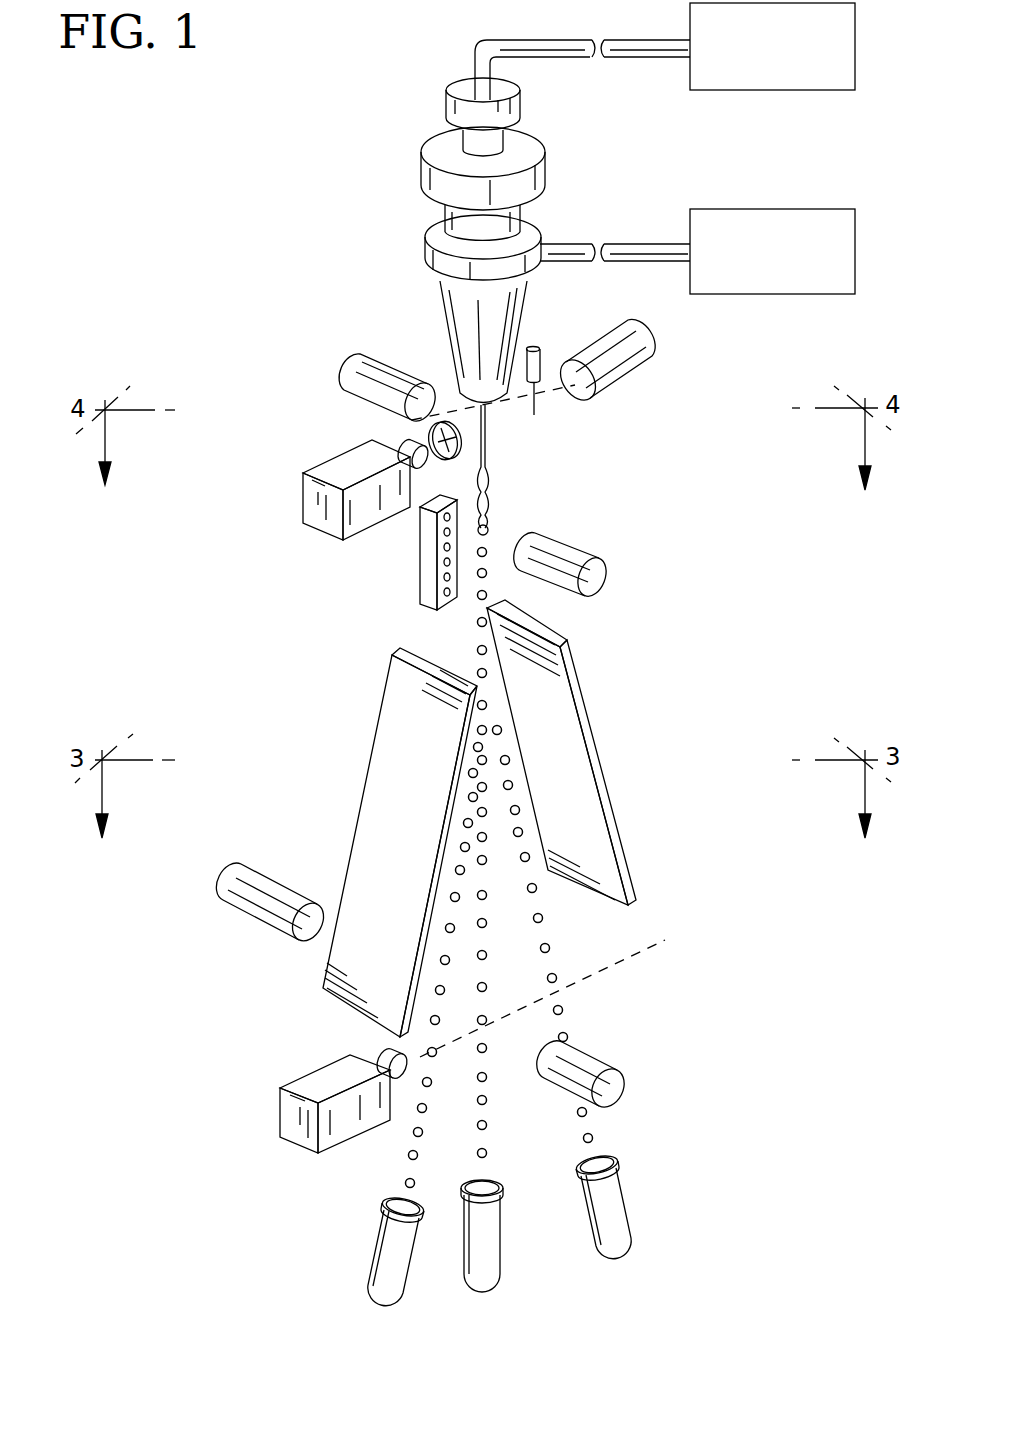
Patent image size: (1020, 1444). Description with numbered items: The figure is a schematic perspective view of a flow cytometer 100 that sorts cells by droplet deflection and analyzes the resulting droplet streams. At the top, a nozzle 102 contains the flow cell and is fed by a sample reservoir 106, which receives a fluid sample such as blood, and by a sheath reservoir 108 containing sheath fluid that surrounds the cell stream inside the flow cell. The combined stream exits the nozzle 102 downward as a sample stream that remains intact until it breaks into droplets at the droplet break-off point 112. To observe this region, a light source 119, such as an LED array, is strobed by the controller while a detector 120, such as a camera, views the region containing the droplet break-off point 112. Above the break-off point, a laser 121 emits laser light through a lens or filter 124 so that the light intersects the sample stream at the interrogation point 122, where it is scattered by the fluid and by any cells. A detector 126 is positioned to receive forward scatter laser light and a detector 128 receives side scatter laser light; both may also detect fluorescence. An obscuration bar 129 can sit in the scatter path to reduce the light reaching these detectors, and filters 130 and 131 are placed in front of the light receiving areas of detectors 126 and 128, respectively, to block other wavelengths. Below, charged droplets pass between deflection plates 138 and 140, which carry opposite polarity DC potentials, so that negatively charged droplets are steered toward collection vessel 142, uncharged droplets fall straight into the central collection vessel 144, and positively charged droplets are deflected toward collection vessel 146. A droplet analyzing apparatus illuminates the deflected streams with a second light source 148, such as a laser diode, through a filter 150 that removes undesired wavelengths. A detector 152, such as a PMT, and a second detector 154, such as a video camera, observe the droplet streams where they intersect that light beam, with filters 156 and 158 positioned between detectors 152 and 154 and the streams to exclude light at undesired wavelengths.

The flow cytometer 100 is at (188, 222).
The nozzle 102 is at (382, 267).
The sample reservoir 106 is at (780, 90).
The sheath reservoir 108 is at (737, 209).
The droplet break-off point 112 is at (483, 525).
The light source 119 is at (427, 570).
The detector 120 is at (596, 576).
The laser 121 is at (310, 500).
The interrogation point 122 is at (485, 420).
The lens or filter 124 is at (425, 433).
The detector 126 is at (650, 335).
The detector 128 is at (357, 370).
The obscuration bar 129 is at (545, 362).
The filter 130 is at (575, 402).
The filter 131 is at (427, 380).
The deflection plate 138 is at (407, 710).
The deflection plate 140 is at (577, 698).
The collection vessel 142 is at (390, 1260).
The central collection vessel 144 is at (488, 1250).
The collection vessel 146 is at (610, 1210).
The second light source 148 is at (287, 1122).
The filter 150 is at (388, 1058).
The detector 152 is at (253, 883).
The second detector 154 is at (593, 1070).
The filter 156 is at (306, 930).
The filter 158 is at (552, 1050).